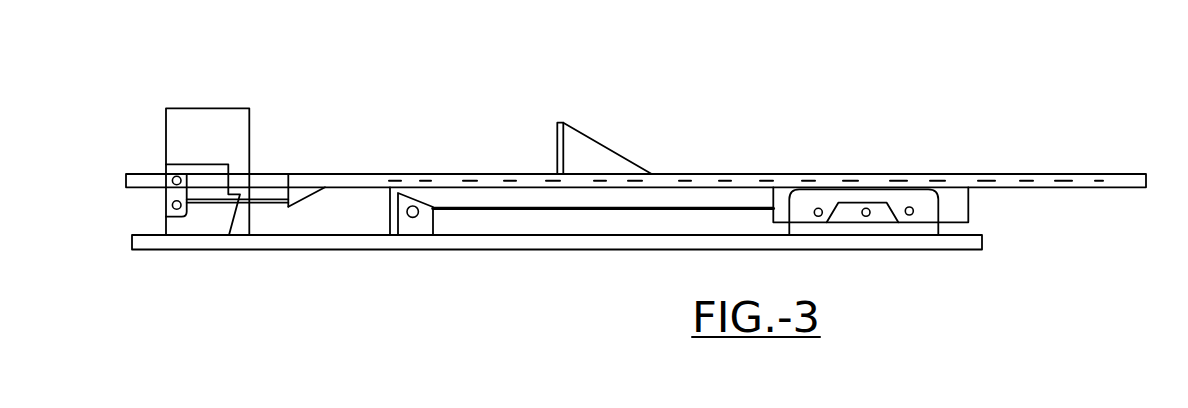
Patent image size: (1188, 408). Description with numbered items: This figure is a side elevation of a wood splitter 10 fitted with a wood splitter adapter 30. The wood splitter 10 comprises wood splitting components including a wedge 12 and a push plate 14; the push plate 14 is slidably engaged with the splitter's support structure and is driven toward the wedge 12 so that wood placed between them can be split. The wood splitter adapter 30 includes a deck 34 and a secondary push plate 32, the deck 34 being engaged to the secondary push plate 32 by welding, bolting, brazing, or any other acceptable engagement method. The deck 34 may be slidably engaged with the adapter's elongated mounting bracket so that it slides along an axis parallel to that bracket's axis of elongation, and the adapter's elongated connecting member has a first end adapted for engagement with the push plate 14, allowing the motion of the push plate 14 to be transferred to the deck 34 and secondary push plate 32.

The wood splitter 10 is at (652, 276).
The wedge 12 is at (266, 118).
The push plate 14 is at (390, 216).
The wood splitter adapter 30 is at (455, 156).
The secondary push plate 32 is at (557, 138).
The deck 34 is at (698, 173).